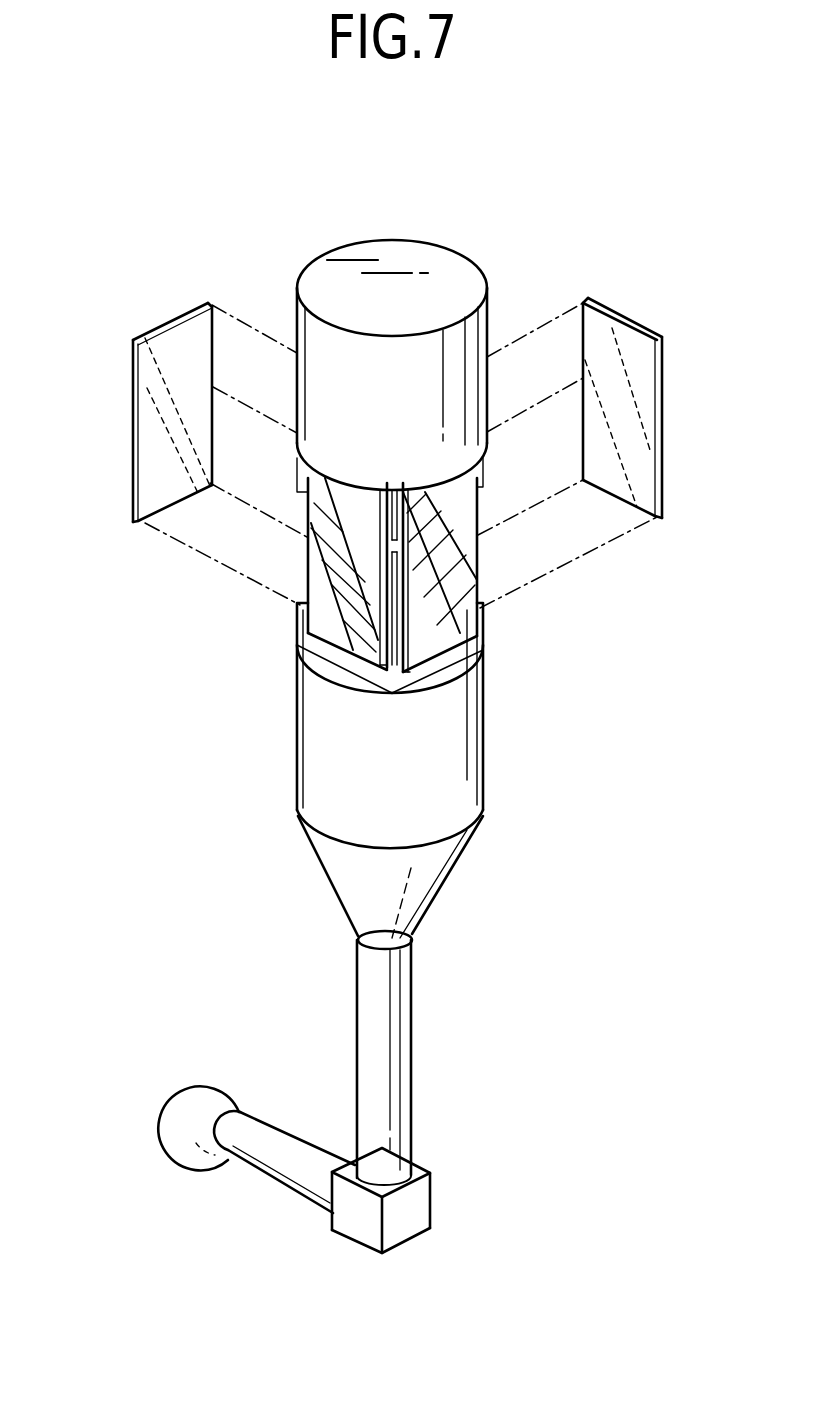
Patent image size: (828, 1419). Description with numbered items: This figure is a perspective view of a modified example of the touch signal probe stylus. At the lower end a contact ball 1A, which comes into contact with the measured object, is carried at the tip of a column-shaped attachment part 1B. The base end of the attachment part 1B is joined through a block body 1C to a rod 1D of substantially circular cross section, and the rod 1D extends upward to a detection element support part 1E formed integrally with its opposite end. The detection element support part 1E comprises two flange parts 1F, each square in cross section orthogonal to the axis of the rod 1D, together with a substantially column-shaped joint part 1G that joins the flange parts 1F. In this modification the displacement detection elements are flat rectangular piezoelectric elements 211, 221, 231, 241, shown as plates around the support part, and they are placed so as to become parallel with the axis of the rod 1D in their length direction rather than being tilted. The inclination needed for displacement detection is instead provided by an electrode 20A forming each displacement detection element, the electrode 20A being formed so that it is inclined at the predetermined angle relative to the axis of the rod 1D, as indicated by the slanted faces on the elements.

The contact ball 1A is at (186, 1118).
The attachment part 1B is at (282, 1188).
The block body 1C is at (400, 1233).
The rod 1D is at (400, 1066).
The detection element support part 1E is at (283, 478).
The flange part 1F is at (307, 492).
The joint part 1G is at (397, 578).
The electrode 20A is at (162, 431).
The piezoelectric element 211 is at (327, 623).
The piezoelectric element 221 is at (422, 647).
The piezoelectric element 231 is at (628, 338).
The piezoelectric element 241 is at (193, 330).